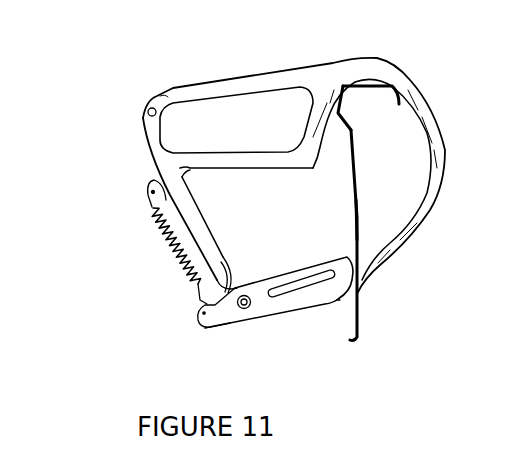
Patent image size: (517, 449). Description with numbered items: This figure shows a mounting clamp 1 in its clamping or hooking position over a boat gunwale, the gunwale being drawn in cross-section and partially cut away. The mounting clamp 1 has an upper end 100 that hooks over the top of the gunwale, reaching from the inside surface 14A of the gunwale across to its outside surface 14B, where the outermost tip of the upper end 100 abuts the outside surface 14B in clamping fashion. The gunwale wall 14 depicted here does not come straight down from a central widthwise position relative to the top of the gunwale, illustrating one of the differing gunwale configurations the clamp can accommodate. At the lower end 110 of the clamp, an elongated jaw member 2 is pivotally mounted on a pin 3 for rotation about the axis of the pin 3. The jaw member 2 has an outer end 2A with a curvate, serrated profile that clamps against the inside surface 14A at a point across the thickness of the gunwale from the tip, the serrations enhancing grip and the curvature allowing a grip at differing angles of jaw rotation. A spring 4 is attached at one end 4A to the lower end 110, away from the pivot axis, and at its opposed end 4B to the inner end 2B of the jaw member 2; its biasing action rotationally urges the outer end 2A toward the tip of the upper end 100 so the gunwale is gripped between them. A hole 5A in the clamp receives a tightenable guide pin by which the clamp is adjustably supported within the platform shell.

The upper end 100 is at (318, 67).
The lower end 110 is at (197, 213).
The mounting clamp 1 is at (387, 250).
The hole 5A is at (150, 108).
The gunwale wall 14 is at (360, 313).
The inside surface 14A is at (353, 220).
The outside surface 14B is at (357, 158).
The jaw member 2 is at (262, 307).
The outer end 2A is at (337, 300).
The inner end 2B is at (203, 325).
The pin 3 is at (238, 308).
The spring 4 is at (182, 283).
The one end of spring 4A is at (150, 205).
The opposed end of spring 4B is at (197, 322).